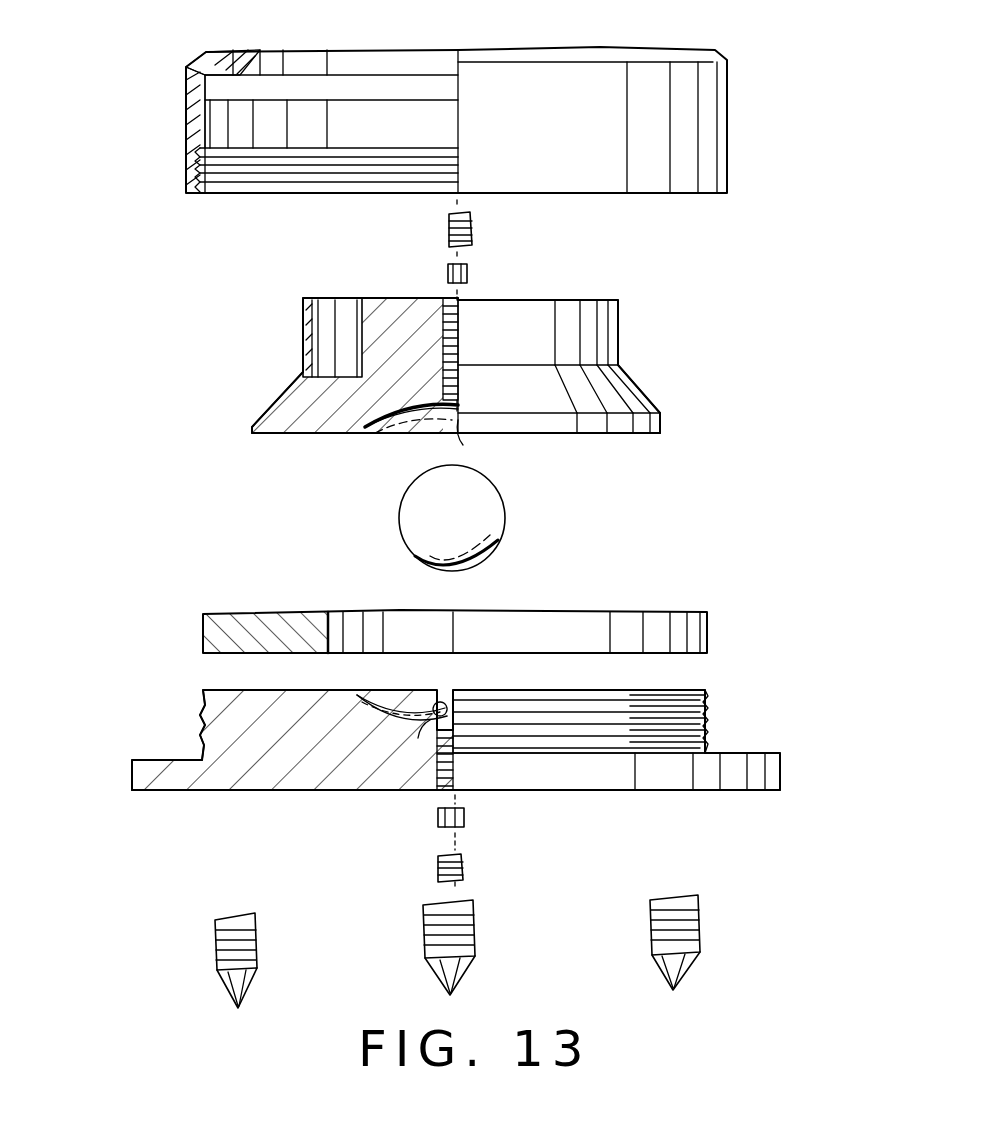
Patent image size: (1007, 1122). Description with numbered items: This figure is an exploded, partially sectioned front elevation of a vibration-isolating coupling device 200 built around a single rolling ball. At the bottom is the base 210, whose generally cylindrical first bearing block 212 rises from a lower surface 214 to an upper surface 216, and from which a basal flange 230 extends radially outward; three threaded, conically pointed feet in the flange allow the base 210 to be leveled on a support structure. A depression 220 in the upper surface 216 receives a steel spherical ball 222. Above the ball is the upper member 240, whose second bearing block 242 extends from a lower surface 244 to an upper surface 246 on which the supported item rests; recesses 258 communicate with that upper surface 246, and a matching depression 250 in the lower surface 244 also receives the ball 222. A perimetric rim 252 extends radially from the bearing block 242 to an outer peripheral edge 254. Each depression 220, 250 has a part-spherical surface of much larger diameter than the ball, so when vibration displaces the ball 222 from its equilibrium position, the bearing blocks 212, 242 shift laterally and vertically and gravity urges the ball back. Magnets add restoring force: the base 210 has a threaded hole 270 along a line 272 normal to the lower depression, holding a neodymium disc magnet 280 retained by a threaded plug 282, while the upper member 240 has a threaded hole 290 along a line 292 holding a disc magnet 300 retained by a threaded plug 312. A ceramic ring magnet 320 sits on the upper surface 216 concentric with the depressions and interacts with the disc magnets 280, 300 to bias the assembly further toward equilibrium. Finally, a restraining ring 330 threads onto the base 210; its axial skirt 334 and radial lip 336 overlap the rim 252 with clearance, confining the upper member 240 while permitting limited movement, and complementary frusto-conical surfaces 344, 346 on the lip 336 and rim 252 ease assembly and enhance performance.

The coupling device 200 is at (162, 422).
The base 210 is at (136, 762).
The first bearing block 212 is at (208, 722).
The lower surface 214 is at (205, 795).
The upper surface 216 is at (680, 692).
The depression 220 is at (393, 700).
The spherical ball 222 is at (498, 512).
The basal flange 230 is at (140, 785).
The upper member 240 is at (483, 365).
The second bearing block 242 is at (305, 340).
The lower surface 244 is at (548, 436).
The upper surface 246 is at (540, 298).
The depression 250 is at (386, 433).
The perimetric rim 252 is at (656, 424).
The outer peripheral edge 254 is at (248, 430).
The recesses 258 is at (330, 300).
The threaded hole 270 is at (455, 775).
The line 272 is at (458, 840).
The disc magnet 280 is at (436, 818).
The threaded plug 282 is at (436, 868).
The threaded hole 290 is at (455, 322).
The line 292 is at (474, 250).
The disc magnet 300 is at (446, 276).
The threaded plug 312 is at (446, 230).
The ring magnet 320 is at (708, 614).
The restraining ring 330 is at (184, 186).
The axial skirt 334 is at (195, 128).
The radial lip 336 is at (245, 45).
The frusto-conical surface 344 is at (258, 62).
The frusto-conical surface 346 is at (268, 403).